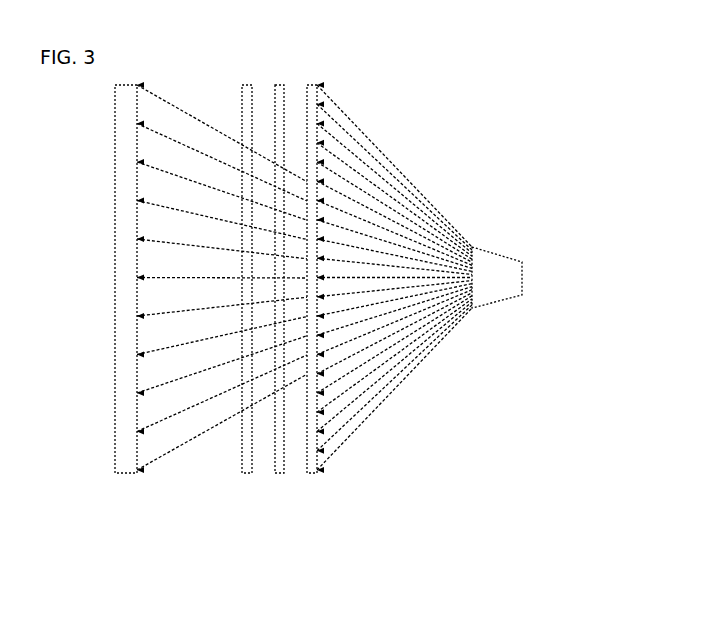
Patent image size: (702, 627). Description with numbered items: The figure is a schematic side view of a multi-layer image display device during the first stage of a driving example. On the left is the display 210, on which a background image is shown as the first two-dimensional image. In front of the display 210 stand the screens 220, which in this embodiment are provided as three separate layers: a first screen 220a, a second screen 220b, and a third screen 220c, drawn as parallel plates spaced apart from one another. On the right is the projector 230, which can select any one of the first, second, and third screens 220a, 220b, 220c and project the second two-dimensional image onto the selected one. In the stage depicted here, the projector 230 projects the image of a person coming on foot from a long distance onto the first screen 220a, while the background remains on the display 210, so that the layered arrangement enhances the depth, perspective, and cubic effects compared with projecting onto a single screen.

The display 210 is at (115, 450).
The screens 220 is at (255, 347).
The first screen 220a is at (309, 328).
The second screen 220b is at (274, 474).
The third screen 220c is at (241, 449).
The projector 230 is at (522, 295).